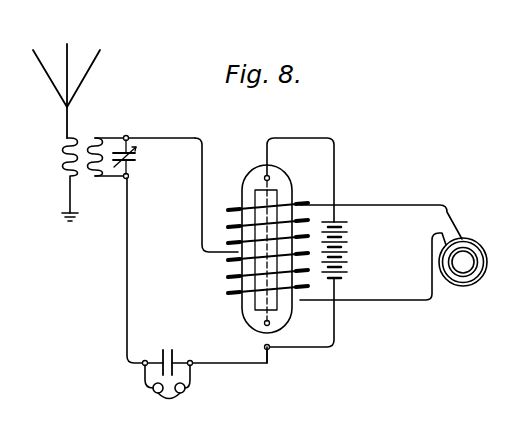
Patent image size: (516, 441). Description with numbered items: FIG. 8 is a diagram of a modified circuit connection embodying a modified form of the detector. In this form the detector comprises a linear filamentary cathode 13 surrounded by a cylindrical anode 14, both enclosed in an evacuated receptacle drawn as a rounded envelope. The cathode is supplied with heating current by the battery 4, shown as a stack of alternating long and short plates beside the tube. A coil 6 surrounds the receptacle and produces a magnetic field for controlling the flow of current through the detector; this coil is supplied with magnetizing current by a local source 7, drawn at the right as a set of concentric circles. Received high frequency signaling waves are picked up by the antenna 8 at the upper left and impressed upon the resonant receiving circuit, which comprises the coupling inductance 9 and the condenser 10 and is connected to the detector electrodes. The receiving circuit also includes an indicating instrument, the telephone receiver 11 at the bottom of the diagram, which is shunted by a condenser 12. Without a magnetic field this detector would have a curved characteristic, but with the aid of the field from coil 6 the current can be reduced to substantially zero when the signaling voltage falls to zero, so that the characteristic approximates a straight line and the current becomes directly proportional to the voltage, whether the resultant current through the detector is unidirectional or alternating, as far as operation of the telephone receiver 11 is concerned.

The antenna 8 is at (67, 44).
The coupling inductance 9 is at (90, 134).
The condenser 10 is at (131, 136).
The linear filamentary cathode 13 is at (263, 175).
The cylindrical anode 14 is at (245, 200).
The coil 6 is at (236, 298).
The battery 4 is at (349, 253).
The local source 7 is at (473, 245).
The condenser 12 is at (168, 347).
The telephone receiver 11 is at (186, 391).